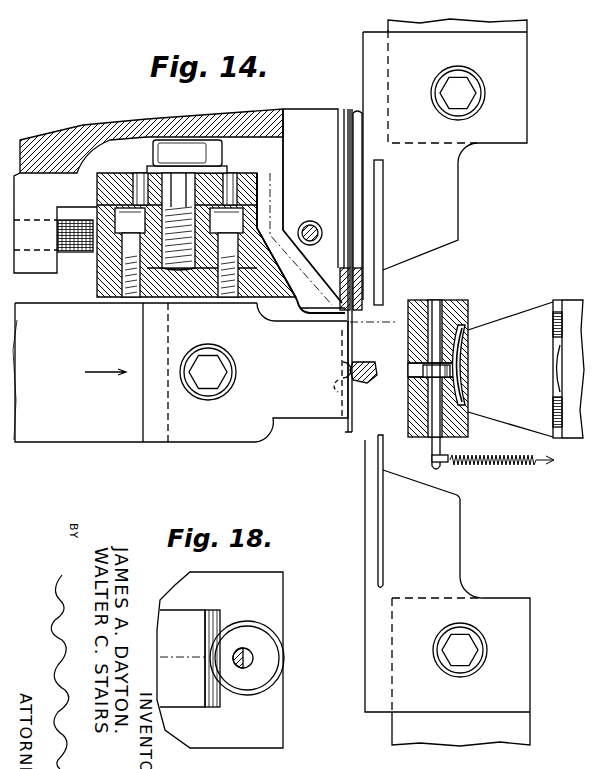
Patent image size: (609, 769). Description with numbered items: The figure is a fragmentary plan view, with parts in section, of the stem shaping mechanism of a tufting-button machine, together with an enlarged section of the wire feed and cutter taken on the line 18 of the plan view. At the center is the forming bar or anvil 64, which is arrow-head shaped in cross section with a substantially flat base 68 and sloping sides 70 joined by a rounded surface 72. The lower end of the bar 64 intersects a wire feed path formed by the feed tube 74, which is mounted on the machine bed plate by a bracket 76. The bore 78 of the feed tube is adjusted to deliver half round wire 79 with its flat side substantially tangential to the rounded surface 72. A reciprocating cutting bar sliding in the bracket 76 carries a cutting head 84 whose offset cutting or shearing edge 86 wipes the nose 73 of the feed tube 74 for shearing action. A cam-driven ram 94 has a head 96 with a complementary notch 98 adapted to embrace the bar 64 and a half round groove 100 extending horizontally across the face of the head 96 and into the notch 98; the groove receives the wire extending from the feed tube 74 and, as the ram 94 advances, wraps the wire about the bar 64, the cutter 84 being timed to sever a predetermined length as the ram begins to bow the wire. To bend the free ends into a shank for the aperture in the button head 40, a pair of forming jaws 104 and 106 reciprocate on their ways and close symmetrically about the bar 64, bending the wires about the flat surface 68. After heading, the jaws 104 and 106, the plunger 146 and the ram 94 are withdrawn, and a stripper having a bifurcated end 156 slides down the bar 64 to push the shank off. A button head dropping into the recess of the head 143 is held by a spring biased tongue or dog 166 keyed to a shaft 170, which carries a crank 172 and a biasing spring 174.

In FIG. 14, the section line 18 is at (288, 333).
In FIG. 14, the button head 40 is at (466, 365).
In FIG. 14, the forming bar or anvil 64 is at (372, 380).
In FIG. 14, the flat base 68 is at (379, 369).
In FIG. 14, the sloping sides 70 is at (371, 362).
In FIG. 14, the rounded surface 72 is at (361, 385).
In FIG. 14, the nose of wire feed tube 73 is at (364, 303).
In FIG. 18, the nose of wire feed tube 73 is at (262, 684).
In FIG. 14, the feed tube 74 is at (340, 290).
In FIG. 18, the feed tube 74 is at (282, 676).
In FIG. 14, the bracket 76 is at (240, 121).
In FIG. 18, the bracket 76 is at (275, 588).
In FIG. 14, the bore of feed tube 78 is at (362, 295).
In FIG. 18, the bore of feed tube 78 is at (256, 657).
In FIG. 14, the half round wire 79 is at (349, 436).
In FIG. 14, the cutting head 84 is at (281, 316).
In FIG. 18, the cutting head 84 is at (183, 620).
In FIG. 14, the cutting or shearing edge 86 is at (338, 323).
In FIG. 18, the cutting or shearing edge 86 is at (216, 710).
In FIG. 14, the ram 94 is at (48, 448).
In FIG. 14, the head of ram 96 is at (314, 405).
In FIG. 14, the notch 98 is at (337, 370).
In FIG. 14, the half round groove 100 is at (338, 386).
In FIG. 14, the forming jaw 104 is at (462, 541).
In FIG. 14, the forming jaw 106 is at (461, 218).
In FIG. 14, the head 143 is at (520, 316).
In FIG. 14, the plunger 146 is at (568, 305).
In FIG. 14, the bifurcated end 156 is at (352, 360).
In FIG. 14, the spring biased tongue or dog 166 is at (424, 372).
In FIG. 14, the shaft 170 is at (437, 302).
In FIG. 14, the crank 172 is at (431, 460).
In FIG. 14, the biasing spring 174 is at (492, 478).